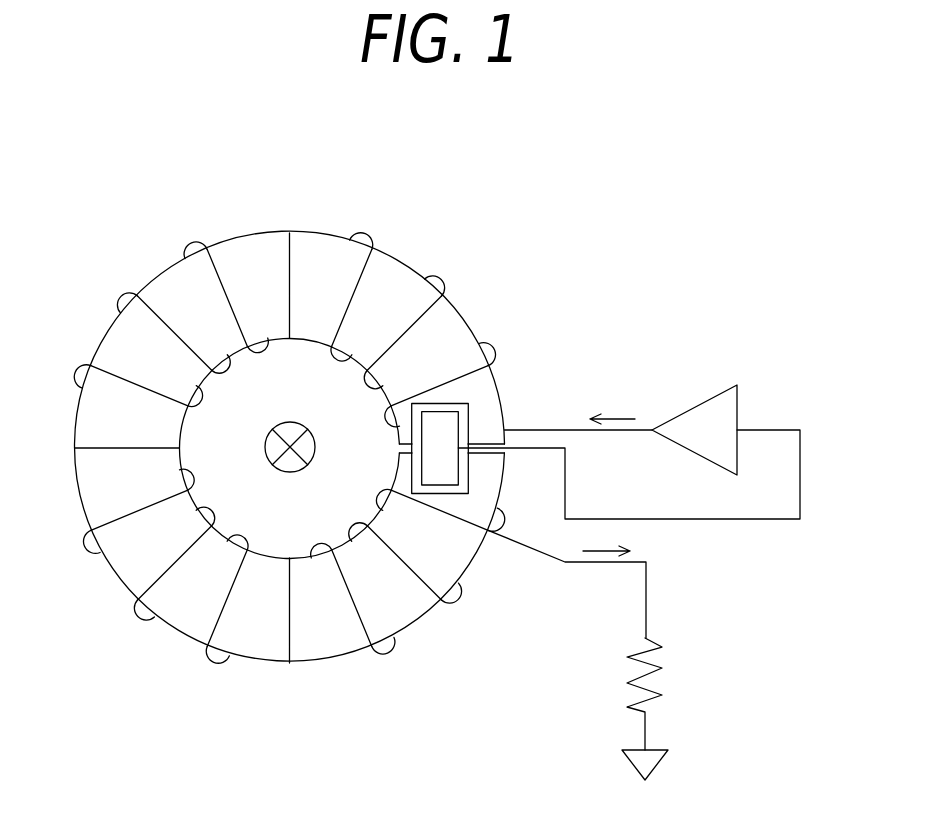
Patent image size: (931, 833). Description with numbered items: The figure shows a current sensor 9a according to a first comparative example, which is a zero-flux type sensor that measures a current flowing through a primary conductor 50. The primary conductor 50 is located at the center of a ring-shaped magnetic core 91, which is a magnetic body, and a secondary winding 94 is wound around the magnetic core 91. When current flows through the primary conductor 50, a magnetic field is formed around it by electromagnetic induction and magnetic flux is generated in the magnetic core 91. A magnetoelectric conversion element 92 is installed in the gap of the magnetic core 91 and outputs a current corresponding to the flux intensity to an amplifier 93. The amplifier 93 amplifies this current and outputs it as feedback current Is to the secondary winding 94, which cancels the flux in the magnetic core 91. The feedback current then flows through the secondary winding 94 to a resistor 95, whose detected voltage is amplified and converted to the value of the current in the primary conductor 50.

The current sensor 9a is at (619, 276).
The magnetic core 91 is at (322, 234).
The secondary winding 94 is at (442, 281).
The magnetoelectric conversion element 92 is at (440, 428).
The amplifier 93 is at (700, 404).
The resistor 95 is at (661, 694).
The primary conductor 50 is at (290, 473).